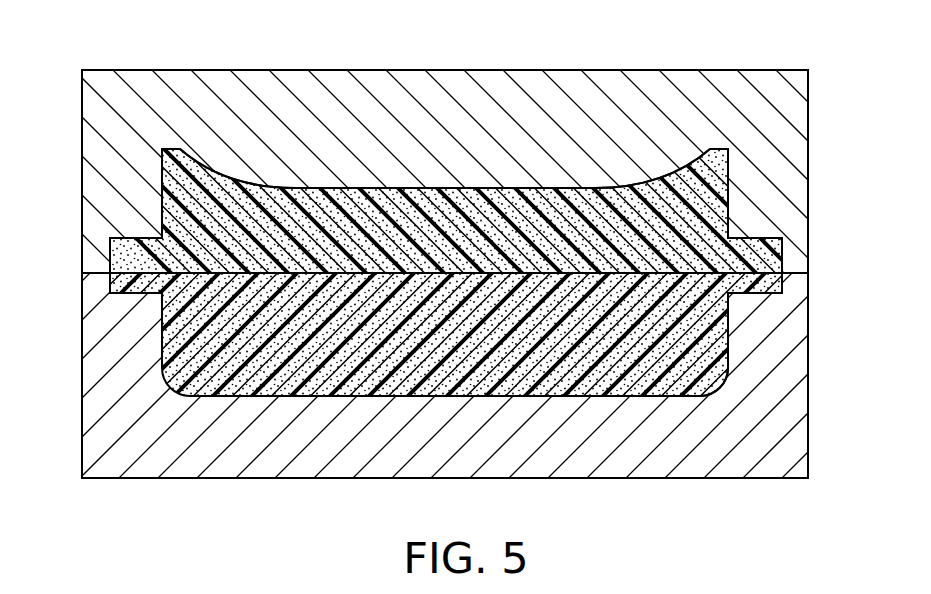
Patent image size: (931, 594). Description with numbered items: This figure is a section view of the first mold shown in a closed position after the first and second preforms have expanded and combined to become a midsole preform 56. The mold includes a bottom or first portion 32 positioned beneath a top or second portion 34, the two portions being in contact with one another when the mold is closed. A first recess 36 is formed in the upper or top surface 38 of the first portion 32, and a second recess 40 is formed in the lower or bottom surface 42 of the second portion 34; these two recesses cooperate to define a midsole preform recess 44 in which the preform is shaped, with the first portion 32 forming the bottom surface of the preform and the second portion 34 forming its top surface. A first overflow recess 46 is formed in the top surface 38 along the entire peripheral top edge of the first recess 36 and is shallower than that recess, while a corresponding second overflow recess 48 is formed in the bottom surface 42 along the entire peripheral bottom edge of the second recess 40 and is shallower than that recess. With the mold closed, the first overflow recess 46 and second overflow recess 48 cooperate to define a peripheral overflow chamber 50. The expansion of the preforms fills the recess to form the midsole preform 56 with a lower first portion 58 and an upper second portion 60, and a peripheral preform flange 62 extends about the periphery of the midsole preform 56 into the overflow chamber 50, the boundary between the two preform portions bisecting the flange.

The first portion 32 is at (104, 467).
The second portion 34 is at (103, 77).
The first recess 36 is at (657, 383).
The top surface 38 is at (98, 273).
The second recess 40 is at (417, 282).
The bottom surface 42 is at (798, 275).
The midsole preform recess 44 is at (300, 396).
The first overflow recess 46 is at (138, 292).
The second overflow recess 48 is at (747, 240).
The peripheral overflow chamber 50 is at (763, 236).
The midsole preform 56 is at (594, 188).
The first portion 58 is at (608, 352).
The second portion 60 is at (308, 200).
The peripheral preform flange 62 is at (763, 257).